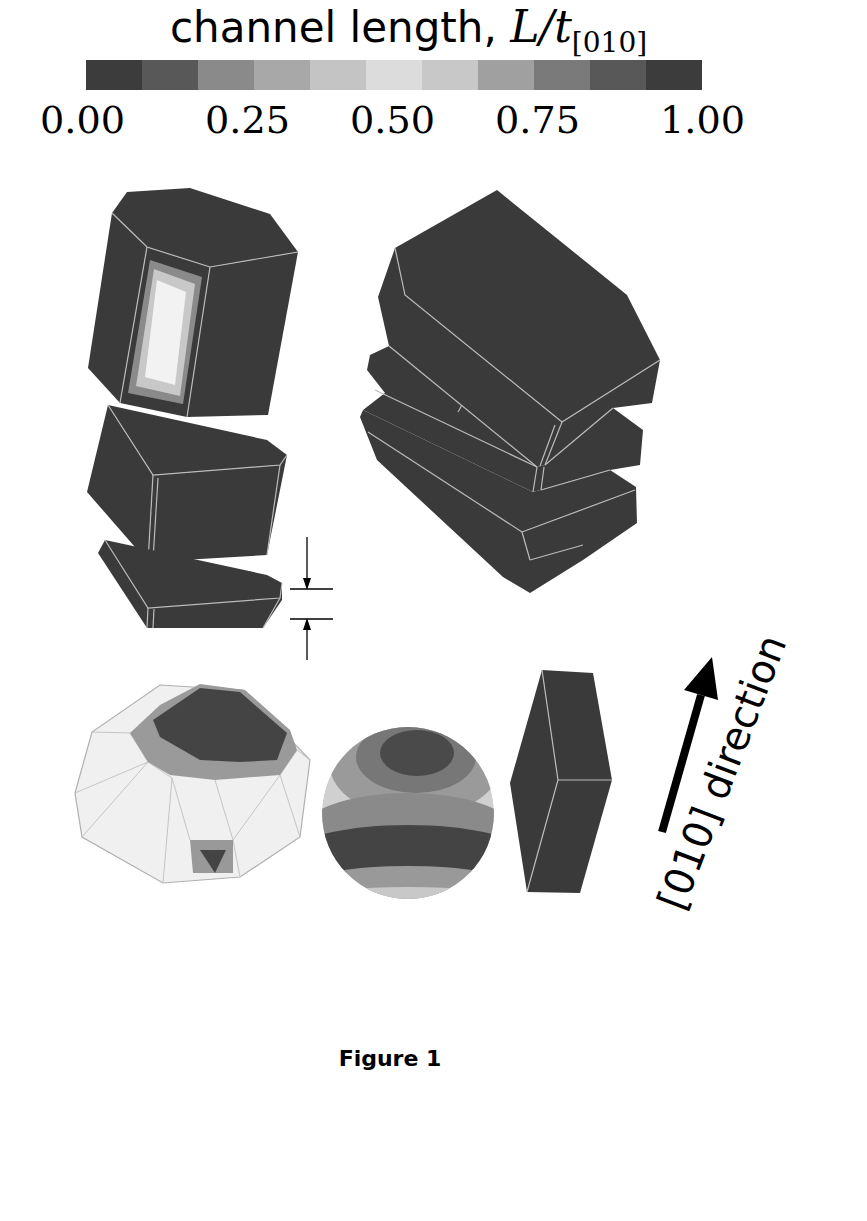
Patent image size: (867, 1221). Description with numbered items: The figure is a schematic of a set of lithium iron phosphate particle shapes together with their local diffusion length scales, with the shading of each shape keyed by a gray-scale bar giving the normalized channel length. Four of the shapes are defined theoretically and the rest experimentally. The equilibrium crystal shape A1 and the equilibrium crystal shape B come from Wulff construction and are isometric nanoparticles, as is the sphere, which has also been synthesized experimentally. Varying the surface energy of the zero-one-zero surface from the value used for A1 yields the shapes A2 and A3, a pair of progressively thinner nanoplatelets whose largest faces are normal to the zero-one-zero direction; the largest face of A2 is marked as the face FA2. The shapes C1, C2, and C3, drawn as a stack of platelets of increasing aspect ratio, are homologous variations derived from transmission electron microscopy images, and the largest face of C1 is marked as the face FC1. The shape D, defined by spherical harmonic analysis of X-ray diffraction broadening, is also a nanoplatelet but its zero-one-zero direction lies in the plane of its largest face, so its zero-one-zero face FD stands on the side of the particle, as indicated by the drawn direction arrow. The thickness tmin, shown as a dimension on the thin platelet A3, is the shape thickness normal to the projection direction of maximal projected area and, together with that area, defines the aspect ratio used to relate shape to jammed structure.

The equilibrium crystal shape A1 is at (92, 290).
The shape A2 is at (188, 475).
The shape A3 is at (108, 540).
The largest face of shape A2 FA2 is at (262, 442).
The thickness of the shape tmin is at (311, 598).
The equilibrium crystal shape B is at (120, 698).
The shape C1 is at (557, 320).
The shape C2 is at (638, 462).
The shape C3 is at (607, 563).
The largest face of shape C1 FC1 is at (566, 262).
The shape D is at (589, 753).
The [010] face of shape D FD is at (577, 680).
The element sphere is at (408, 791).